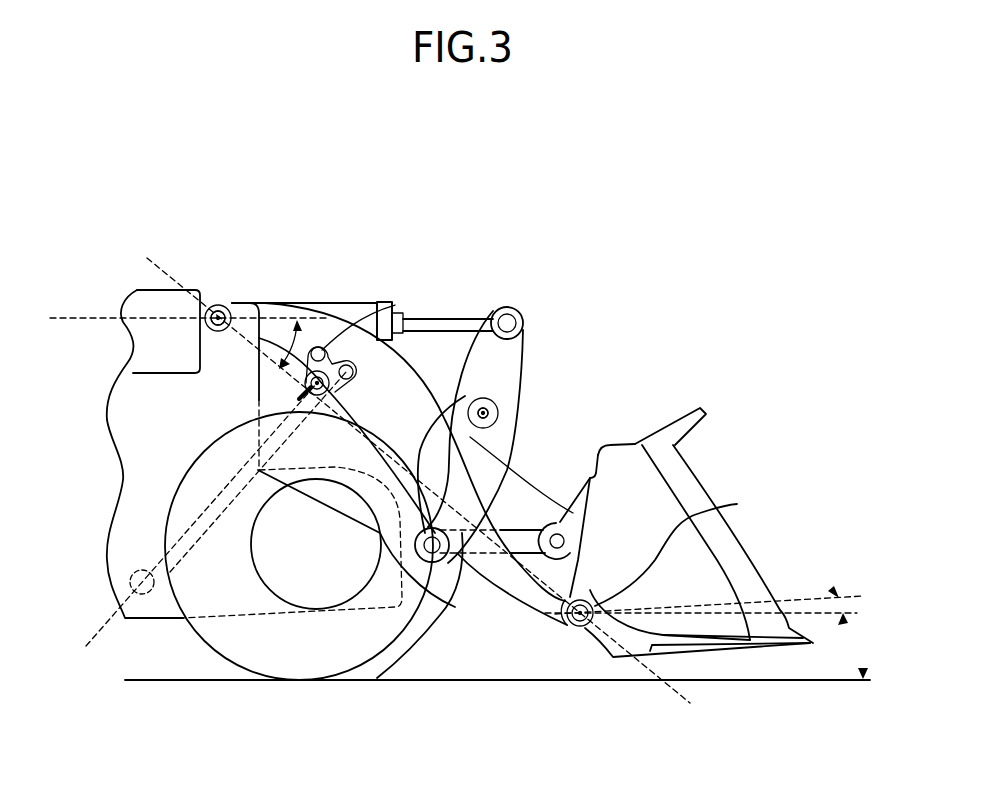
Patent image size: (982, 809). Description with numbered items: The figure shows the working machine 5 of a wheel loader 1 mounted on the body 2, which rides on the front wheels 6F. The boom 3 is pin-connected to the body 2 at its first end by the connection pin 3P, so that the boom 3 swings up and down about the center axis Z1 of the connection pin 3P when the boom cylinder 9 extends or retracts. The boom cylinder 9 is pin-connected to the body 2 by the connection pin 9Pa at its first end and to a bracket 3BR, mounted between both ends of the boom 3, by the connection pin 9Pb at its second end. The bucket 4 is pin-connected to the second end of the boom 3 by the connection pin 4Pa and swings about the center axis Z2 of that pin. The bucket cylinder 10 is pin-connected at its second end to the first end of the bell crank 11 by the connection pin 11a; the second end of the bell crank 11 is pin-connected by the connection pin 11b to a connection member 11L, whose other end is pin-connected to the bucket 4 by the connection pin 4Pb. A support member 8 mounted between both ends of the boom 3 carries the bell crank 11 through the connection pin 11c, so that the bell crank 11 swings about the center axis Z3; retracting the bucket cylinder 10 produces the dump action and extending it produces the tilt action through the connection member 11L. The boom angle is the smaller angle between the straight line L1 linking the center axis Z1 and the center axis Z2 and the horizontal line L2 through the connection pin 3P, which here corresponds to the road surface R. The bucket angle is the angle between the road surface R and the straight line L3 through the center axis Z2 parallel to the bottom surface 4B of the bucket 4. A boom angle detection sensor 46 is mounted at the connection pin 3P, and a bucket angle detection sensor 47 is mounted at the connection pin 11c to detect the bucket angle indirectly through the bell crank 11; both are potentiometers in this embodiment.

The wheel loader 1 is at (769, 167).
The body 2 is at (165, 605).
The boom 3 is at (398, 378).
The bracket 3BR is at (389, 302).
The connection pin 3P is at (218, 333).
The bucket 4 is at (668, 500).
The bottom surface 4B is at (741, 654).
The connection pin 4Pa is at (563, 627).
The connection pin 4Pb is at (559, 534).
The working machine 5 is at (698, 229).
The front wheels 6F is at (323, 662).
The support member 8 is at (470, 435).
The boom cylinder 9 is at (340, 320).
The connection pin 9Pa is at (104, 619).
The connection pin 9Pb is at (420, 320).
The bucket cylinder 10 is at (355, 302).
The bell crank 11 is at (503, 385).
The connection pin 11a is at (515, 313).
The connection pin 11b is at (432, 556).
The connection pin 11c is at (480, 400).
The connection member 11L is at (511, 530).
The boom angle detection sensor 46 is at (238, 302).
The bucket angle detection sensor 47 is at (498, 423).
The center axis Z1 is at (219, 307).
The center axis Z2 is at (580, 628).
The center axis Z3 is at (492, 411).
The straight line L1 is at (418, 508).
The horizontal line L2 is at (274, 318).
The straight line L3 is at (782, 597).
The road surface R is at (863, 675).